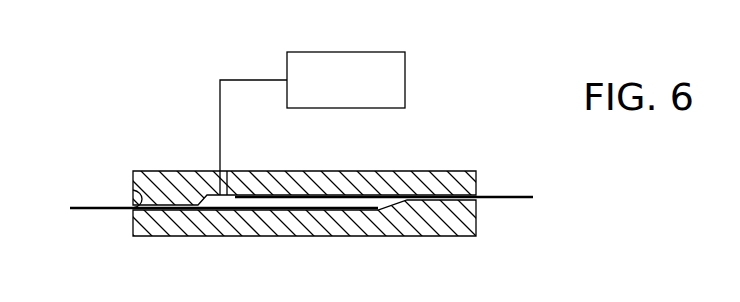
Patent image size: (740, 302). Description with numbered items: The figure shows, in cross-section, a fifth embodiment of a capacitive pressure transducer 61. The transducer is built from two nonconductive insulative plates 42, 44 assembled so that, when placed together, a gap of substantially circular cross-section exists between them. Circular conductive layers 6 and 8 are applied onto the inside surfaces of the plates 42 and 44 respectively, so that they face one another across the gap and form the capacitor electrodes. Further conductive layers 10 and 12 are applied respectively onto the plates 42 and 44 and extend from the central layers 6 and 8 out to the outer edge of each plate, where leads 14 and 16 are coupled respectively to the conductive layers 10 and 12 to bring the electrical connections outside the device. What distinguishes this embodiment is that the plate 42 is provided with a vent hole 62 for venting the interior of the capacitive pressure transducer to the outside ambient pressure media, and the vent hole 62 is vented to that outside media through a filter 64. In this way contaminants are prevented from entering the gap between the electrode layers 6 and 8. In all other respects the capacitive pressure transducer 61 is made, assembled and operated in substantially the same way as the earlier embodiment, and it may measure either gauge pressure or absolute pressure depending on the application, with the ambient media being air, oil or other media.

The conductive layer 6 is at (297, 195).
The conductive layer 8 is at (283, 208).
The conductive layer 10 is at (470, 172).
The conductive layer 12 is at (133, 188).
The lead 14 is at (533, 196).
The lead 16 is at (83, 207).
The plate 42 is at (388, 176).
The plate 44 is at (453, 237).
The capacitive pressure transducer 61 is at (455, 118).
The vent hole 62 is at (218, 170).
The filter 64 is at (392, 52).